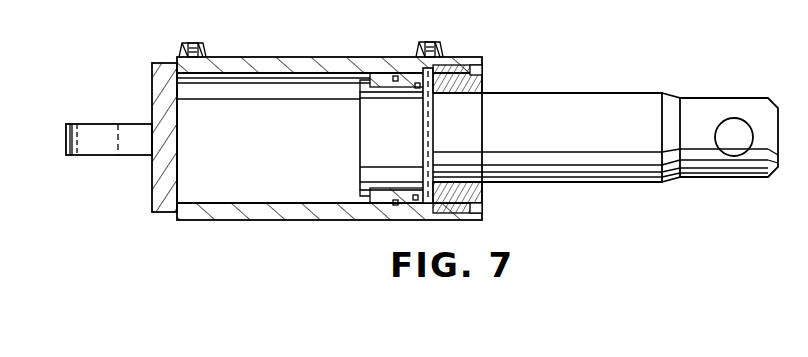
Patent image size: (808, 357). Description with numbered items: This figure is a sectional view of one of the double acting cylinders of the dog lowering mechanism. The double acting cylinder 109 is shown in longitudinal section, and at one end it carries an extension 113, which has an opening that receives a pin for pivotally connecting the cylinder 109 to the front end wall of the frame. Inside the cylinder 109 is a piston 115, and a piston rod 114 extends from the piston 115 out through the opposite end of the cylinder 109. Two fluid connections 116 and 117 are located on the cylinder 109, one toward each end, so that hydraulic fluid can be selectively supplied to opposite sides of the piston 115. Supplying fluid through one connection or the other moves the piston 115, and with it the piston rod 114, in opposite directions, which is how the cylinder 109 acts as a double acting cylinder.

The double acting cylinder 109 is at (280, 220).
The extension 113 is at (122, 157).
The piston rod 114 is at (595, 183).
The piston 115 is at (360, 138).
The fluid connection 116 is at (197, 43).
The fluid connection 117 is at (431, 42).